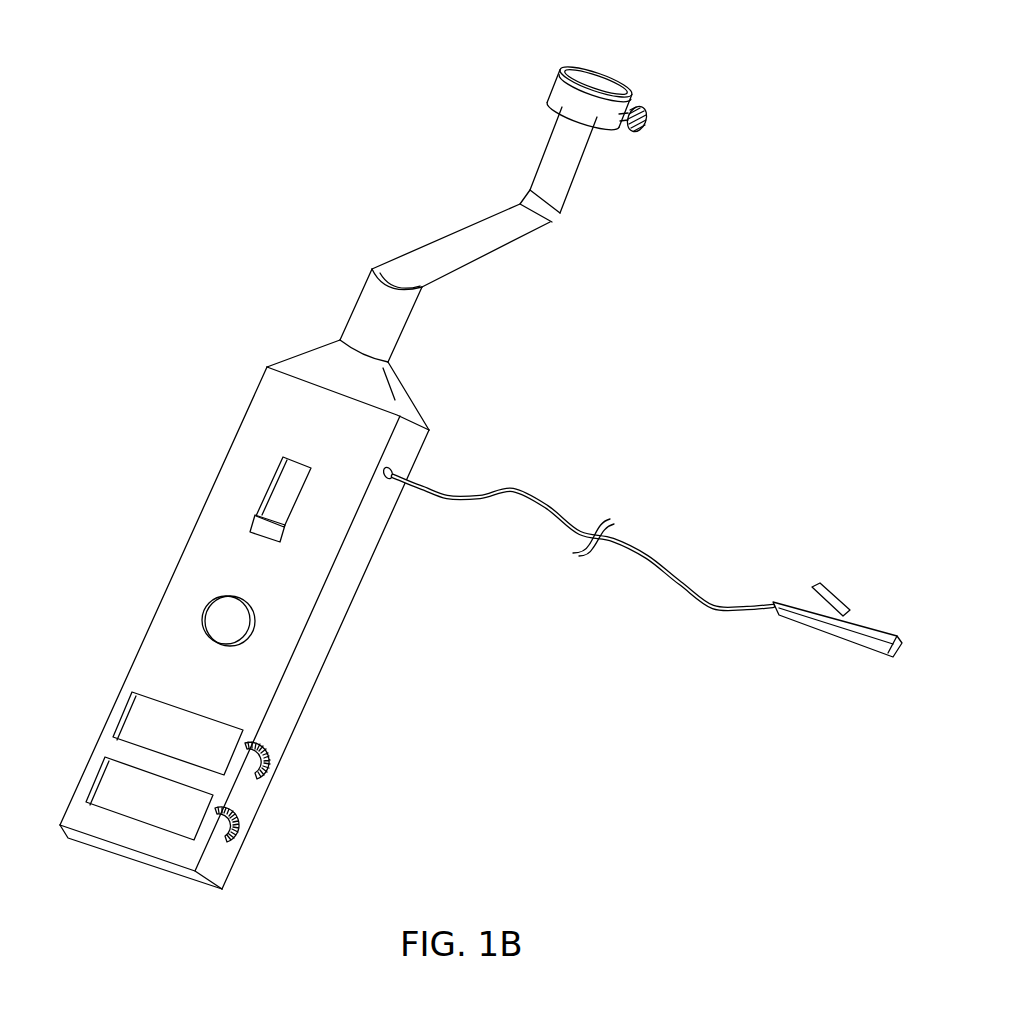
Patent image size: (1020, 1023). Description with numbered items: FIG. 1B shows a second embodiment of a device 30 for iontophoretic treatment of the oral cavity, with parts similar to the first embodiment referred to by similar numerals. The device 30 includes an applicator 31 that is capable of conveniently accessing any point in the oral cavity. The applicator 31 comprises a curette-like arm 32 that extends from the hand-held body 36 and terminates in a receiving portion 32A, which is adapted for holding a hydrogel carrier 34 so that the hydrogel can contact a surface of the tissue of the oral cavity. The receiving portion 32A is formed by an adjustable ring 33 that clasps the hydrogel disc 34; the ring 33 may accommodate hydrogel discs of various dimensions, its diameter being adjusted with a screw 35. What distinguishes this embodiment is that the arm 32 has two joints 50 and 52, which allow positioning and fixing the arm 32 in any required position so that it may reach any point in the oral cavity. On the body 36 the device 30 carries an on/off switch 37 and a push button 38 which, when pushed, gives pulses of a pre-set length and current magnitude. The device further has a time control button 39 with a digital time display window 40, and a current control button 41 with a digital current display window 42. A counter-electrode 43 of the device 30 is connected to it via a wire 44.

The device 30 is at (286, 101).
The applicator 31 is at (522, 294).
The curette-like arm 32 is at (448, 233).
The receiving portion 32A is at (702, 113).
The adjustable ring 33 is at (547, 99).
The hydrogel carrier 34 is at (603, 72).
The screw 35 is at (648, 125).
The housing 36 is at (307, 640).
The on/off switch 37 is at (262, 525).
The push button 38 is at (218, 617).
The time control button 39 is at (268, 760).
The digital time display window 40 is at (143, 712).
The current control button 41 is at (240, 836).
The digital current display window 42 is at (117, 763).
The counter-electrode 43 is at (865, 623).
The wire 44 is at (665, 567).
The joint 50 is at (424, 288).
The joint 52 is at (558, 222).